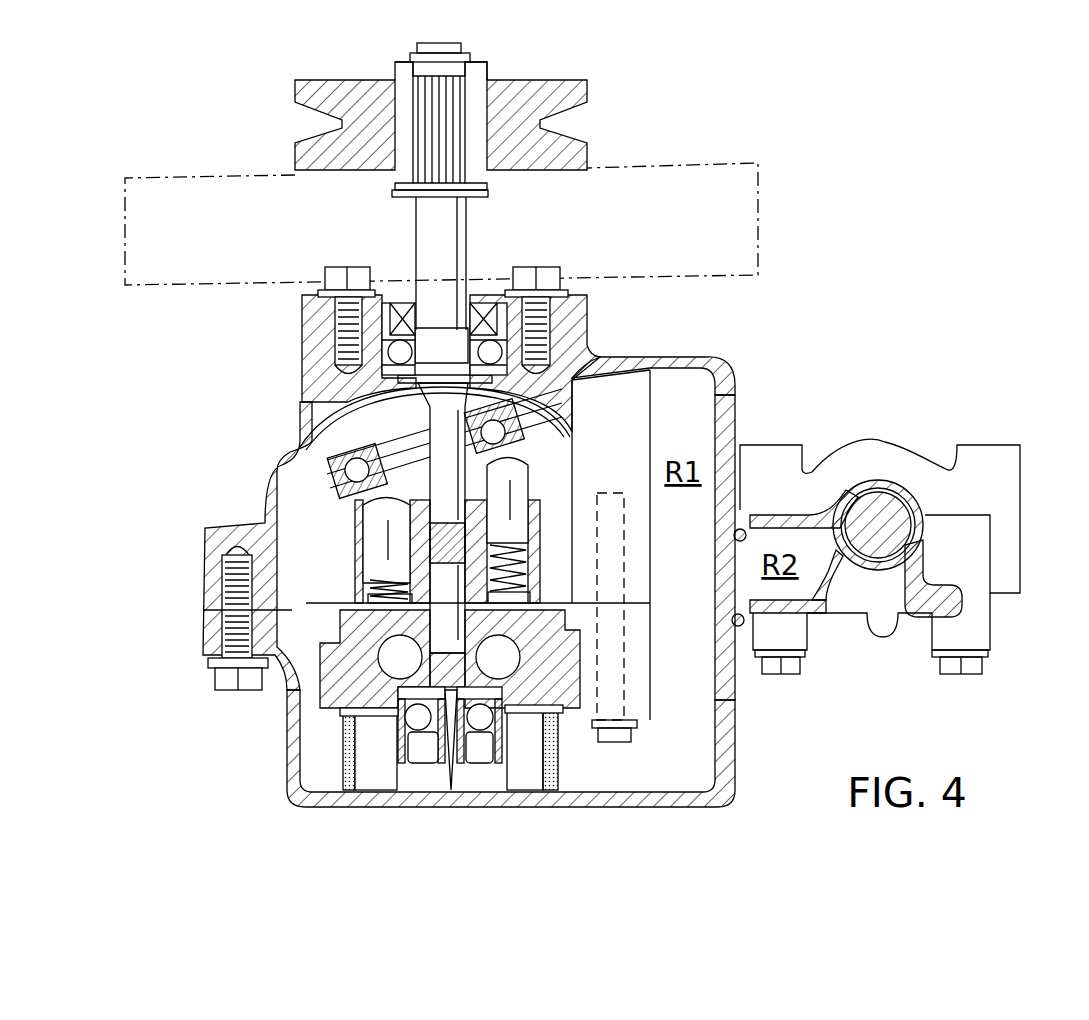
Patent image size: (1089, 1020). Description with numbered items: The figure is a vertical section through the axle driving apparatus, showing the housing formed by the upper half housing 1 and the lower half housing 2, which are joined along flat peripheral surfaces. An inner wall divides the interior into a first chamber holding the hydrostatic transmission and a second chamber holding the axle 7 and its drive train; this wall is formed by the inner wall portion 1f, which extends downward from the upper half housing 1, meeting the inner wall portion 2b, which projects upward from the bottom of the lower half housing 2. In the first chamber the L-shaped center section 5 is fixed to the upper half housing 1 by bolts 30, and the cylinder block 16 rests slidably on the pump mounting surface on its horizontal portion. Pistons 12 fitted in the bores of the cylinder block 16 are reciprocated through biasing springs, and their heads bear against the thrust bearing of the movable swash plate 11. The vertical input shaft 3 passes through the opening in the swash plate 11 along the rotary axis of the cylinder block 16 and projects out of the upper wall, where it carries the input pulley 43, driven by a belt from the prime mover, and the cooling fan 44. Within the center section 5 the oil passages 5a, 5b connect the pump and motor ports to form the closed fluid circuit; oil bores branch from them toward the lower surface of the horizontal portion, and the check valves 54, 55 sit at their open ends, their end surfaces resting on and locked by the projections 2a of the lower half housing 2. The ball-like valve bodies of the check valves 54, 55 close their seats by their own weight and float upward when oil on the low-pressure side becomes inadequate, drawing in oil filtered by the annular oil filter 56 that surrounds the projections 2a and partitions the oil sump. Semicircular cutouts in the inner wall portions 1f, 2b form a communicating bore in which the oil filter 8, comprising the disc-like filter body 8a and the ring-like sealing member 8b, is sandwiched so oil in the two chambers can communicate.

The upper half housing 1 is at (300, 447).
The inner wall portion 1f is at (714, 420).
The lower half housing 2 is at (287, 755).
The projection 2a is at (548, 774).
The inner wall portion 2b is at (715, 650).
The input shaft 3 is at (470, 226).
The center section 5 is at (320, 702).
The oil passage 5a is at (395, 644).
The oil passage 5b is at (508, 640).
The axle 7 is at (890, 500).
The oil filter 8 is at (735, 565).
The filter body 8a is at (745, 582).
The sealing member 8b is at (744, 532).
The movable swash plate 11 is at (328, 468).
The piston 12 is at (378, 527).
The cylinder block 16 is at (362, 578).
The bolt 30 is at (640, 748).
The input pulley 43 is at (587, 92).
The cooling fan 44 is at (736, 163).
The check valve 54 is at (421, 732).
The check valve 55 is at (481, 733).
The oil filter 56 is at (348, 760).